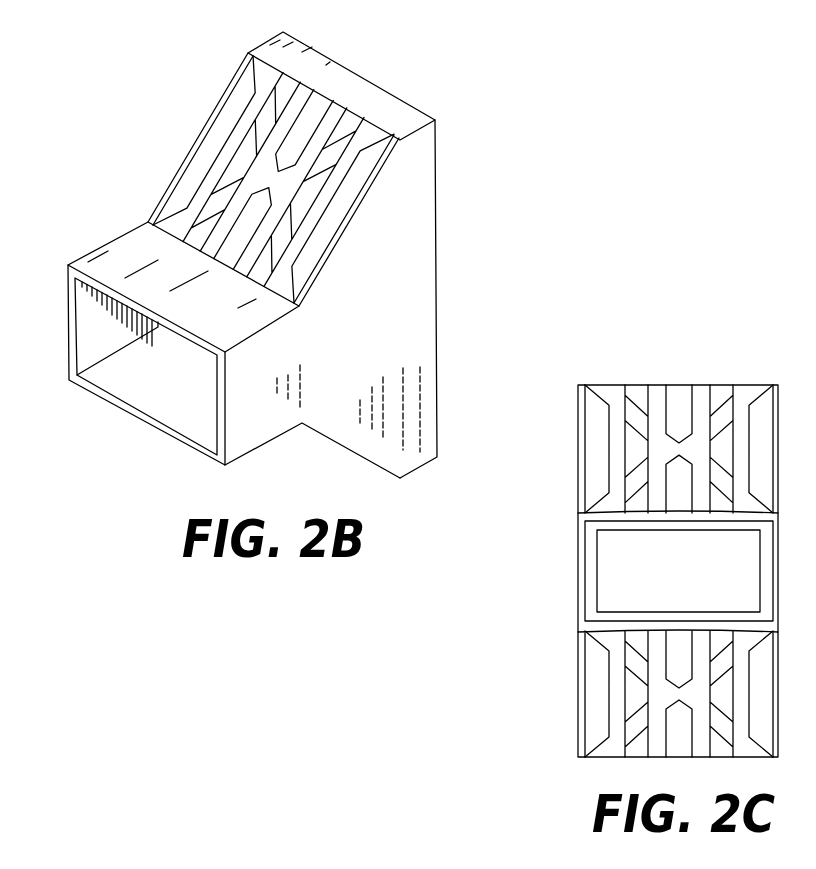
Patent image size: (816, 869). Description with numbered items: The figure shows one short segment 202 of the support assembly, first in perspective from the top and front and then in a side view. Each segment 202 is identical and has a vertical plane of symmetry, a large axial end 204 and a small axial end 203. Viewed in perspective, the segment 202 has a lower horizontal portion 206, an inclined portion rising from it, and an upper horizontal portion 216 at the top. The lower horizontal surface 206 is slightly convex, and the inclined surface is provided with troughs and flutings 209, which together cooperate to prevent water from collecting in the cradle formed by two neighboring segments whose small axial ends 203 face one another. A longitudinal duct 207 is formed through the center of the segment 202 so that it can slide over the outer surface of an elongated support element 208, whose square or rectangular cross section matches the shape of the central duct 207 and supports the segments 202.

In FIG. 2B, the segment 202 is at (469, 262).
In FIG. 2B, the small axial end 203 is at (213, 465).
In FIG. 2C, the small axial end 203 is at (623, 628).
In FIG. 2B, the large axial end 204 is at (437, 362).
In FIG. 2B, the lower horizontal portion 206 is at (263, 317).
In FIG. 2B, the longitudinal duct 207 is at (100, 333).
In FIG. 2C, the longitudinal duct 207 is at (585, 543).
In FIG. 2C, the elongated support element 208 is at (597, 588).
In FIG. 2B, the troughs and flutings 209 is at (232, 143).
In FIG. 2B, the upper horizontal portion 216 is at (405, 117).